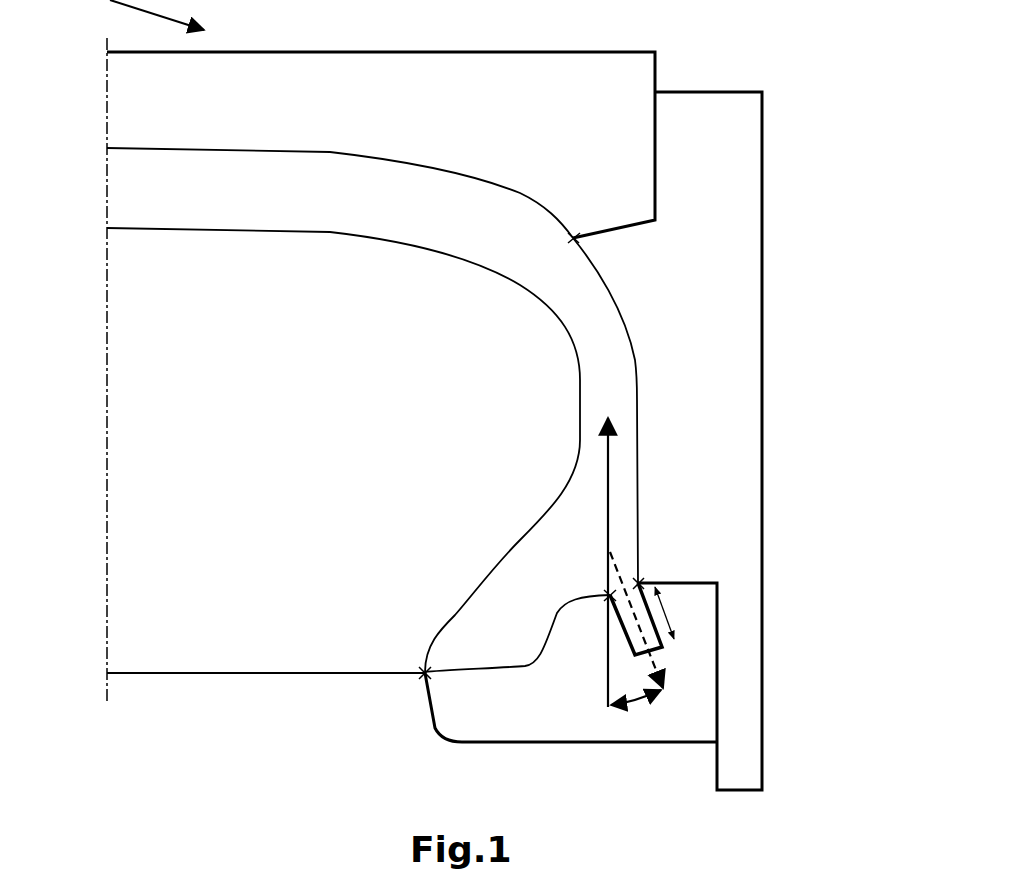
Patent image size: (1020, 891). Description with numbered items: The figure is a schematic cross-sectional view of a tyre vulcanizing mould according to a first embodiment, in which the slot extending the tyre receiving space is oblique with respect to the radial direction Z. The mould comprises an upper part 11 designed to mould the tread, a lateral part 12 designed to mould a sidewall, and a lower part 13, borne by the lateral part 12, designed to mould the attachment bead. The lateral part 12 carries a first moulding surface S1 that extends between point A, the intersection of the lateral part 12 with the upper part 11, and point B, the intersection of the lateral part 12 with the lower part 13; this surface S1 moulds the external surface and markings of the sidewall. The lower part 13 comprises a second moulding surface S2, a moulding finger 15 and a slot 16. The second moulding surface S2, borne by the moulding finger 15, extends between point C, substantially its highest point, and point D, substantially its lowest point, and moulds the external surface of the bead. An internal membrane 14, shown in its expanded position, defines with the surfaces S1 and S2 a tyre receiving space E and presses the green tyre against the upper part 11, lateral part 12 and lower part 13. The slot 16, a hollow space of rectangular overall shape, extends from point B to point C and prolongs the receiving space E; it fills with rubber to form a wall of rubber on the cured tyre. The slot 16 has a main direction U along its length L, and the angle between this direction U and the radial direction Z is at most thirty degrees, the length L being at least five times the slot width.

The upper part 11 is at (472, 108).
The lateral part 12 is at (707, 312).
The lower part 13 is at (572, 733).
The internal membrane 14 is at (252, 451).
The moulding finger 15 is at (622, 628).
The slot 16 is at (662, 647).
The first moulding surface S1 is at (635, 492).
The second moulding surface S2 is at (548, 640).
The point A is at (575, 215).
The point B is at (651, 567).
The point C is at (599, 581).
The point D is at (413, 657).
The tyre receiving space E is at (566, 292).
The radial direction Z is at (607, 542).
The main direction U is at (651, 636).
The length L is at (674, 613).